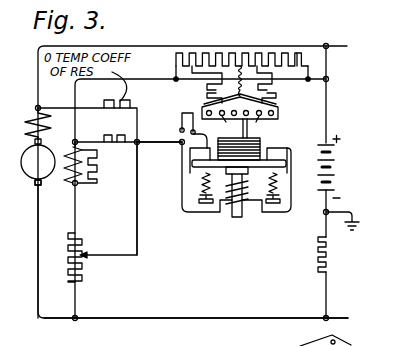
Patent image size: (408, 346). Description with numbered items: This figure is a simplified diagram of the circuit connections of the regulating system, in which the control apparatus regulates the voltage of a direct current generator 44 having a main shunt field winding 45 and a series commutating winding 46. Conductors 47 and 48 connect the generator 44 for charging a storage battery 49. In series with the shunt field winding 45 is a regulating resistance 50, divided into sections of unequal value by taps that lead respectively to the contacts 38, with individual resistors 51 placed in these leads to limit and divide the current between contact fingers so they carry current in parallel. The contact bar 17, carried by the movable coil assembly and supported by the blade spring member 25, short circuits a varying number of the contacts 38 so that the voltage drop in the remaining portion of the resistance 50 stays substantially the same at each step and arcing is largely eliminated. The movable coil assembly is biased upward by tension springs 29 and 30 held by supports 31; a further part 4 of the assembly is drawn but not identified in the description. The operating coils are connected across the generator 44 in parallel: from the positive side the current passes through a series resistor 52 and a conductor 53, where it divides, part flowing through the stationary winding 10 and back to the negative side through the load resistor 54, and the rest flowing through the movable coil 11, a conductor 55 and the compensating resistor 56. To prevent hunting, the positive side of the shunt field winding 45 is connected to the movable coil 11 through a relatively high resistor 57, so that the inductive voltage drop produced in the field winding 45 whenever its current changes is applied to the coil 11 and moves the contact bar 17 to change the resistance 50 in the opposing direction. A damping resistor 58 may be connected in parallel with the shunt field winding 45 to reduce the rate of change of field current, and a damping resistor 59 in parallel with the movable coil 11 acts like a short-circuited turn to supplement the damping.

The spring 4 is at (244, 181).
The field or stationary winding 10 is at (231, 205).
The movable coil 11 is at (262, 142).
The contact bar 17 is at (279, 113).
The blade spring member 25 is at (207, 106).
The tension spring 29 is at (202, 186).
The tension spring 30 is at (280, 186).
The support 31 is at (190, 165).
The contact 38 is at (244, 126).
The direct current generator 44 is at (38, 227).
The main shunt field winding 45 is at (52, 183).
The series commutating winding 46 is at (46, 123).
The conductor 47 is at (150, 47).
The conductor 48 is at (118, 318).
The storage battery 49 is at (336, 160).
The regulating resistance 50 is at (296, 54).
The individual resistor 51 is at (207, 90).
The series resistor 52 is at (121, 100).
The conductor 53 is at (157, 140).
The load resistor 54 is at (330, 250).
The conductor 55 is at (137, 205).
The compensating resistor 56 is at (68, 260).
The relatively high resistor 57 is at (114, 131).
The damping resistor 58 is at (100, 170).
The damping resistor 59 is at (181, 115).